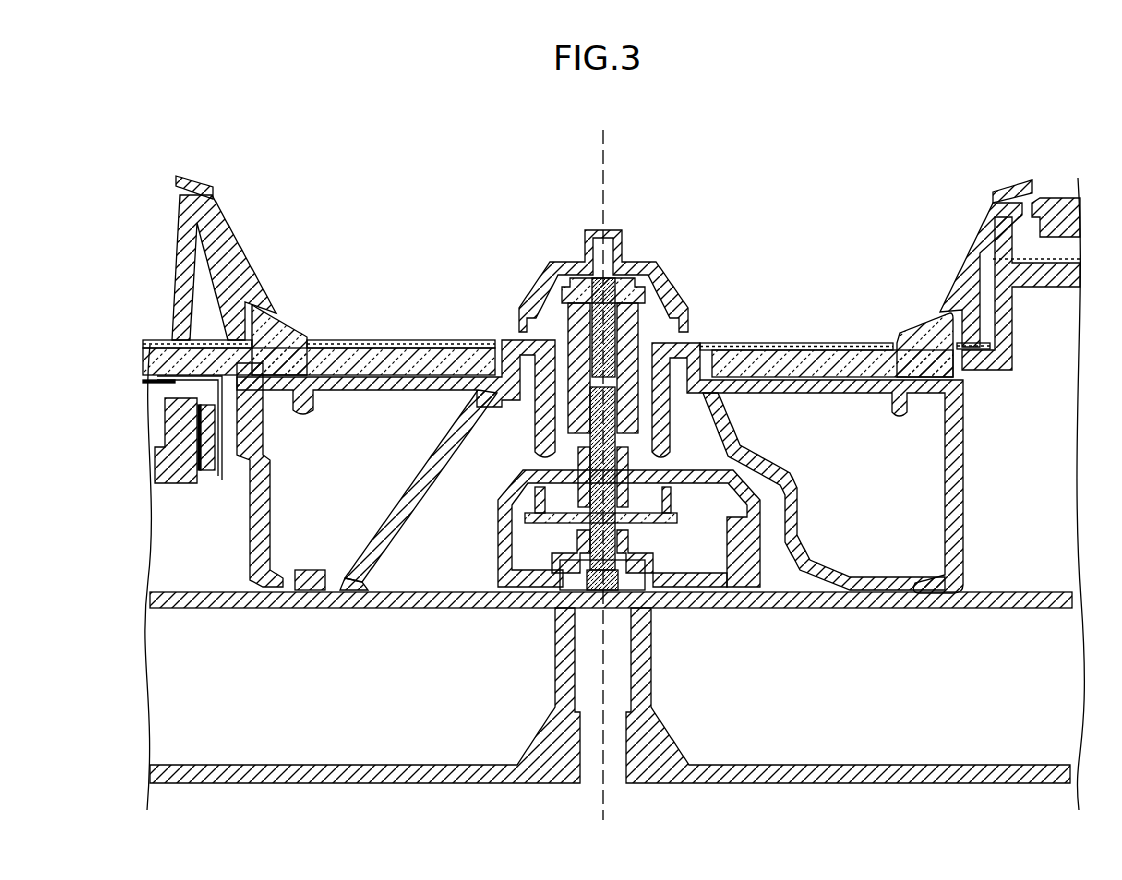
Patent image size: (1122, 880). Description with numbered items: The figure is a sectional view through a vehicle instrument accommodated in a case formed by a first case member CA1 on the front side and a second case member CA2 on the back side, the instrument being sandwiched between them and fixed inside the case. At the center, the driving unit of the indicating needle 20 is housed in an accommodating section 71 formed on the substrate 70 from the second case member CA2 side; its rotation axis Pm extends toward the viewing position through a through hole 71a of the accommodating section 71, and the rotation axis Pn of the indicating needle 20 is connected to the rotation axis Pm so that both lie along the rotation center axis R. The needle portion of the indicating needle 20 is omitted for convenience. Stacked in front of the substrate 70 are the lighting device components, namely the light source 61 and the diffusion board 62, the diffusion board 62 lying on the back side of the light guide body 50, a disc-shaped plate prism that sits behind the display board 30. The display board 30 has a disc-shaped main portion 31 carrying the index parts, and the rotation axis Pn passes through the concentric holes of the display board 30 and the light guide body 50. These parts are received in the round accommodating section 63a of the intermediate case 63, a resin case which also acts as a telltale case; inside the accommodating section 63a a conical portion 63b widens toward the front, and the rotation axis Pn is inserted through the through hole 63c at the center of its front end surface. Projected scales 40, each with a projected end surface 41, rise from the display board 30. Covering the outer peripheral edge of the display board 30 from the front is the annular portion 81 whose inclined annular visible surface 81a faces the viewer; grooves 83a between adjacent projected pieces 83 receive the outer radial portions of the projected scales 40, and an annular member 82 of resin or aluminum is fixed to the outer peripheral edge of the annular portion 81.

The indicating needle 20 is at (614, 230).
The display board 30 is at (826, 319).
The main portion 31 is at (758, 343).
The projected scale 40 is at (288, 341).
The projected end surface 41 is at (308, 338).
The light guide body 50 is at (319, 311).
The light source 61 is at (310, 570).
The diffusion board 62 is at (388, 394).
The intermediate case 63 is at (847, 468).
The accommodating section 63a is at (920, 446).
The conical portion 63b is at (800, 482).
The through hole 63c is at (570, 443).
The substrate 70 is at (1015, 589).
The accommodating section 71 is at (611, 576).
The through hole 71a is at (605, 500).
The annular portion 81 is at (250, 228).
The annular visible surface 81a is at (237, 235).
The annular member 82 is at (201, 177).
The projected piece 83 is at (1010, 275).
The groove 83a is at (276, 305).
The rotation center axis R is at (606, 146).
The rotation axis Pn is at (640, 340).
The rotation axis Pm is at (706, 435).
The first case member CA1 is at (174, 279).
The second case member CA2 is at (1000, 706).